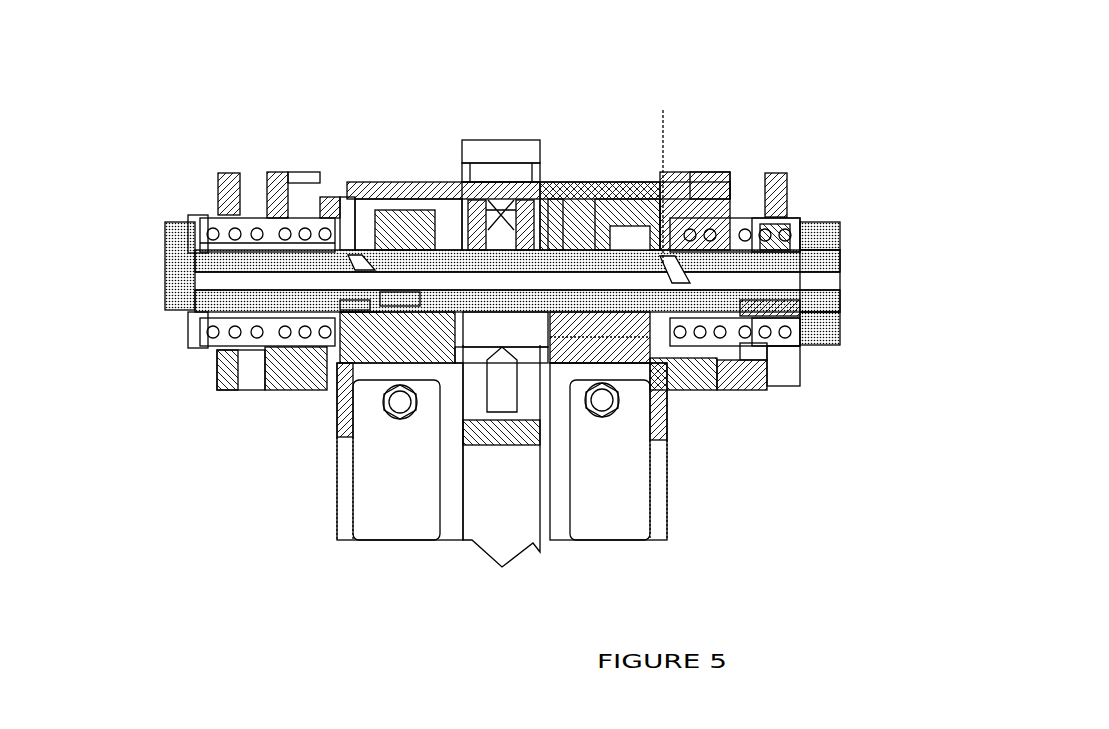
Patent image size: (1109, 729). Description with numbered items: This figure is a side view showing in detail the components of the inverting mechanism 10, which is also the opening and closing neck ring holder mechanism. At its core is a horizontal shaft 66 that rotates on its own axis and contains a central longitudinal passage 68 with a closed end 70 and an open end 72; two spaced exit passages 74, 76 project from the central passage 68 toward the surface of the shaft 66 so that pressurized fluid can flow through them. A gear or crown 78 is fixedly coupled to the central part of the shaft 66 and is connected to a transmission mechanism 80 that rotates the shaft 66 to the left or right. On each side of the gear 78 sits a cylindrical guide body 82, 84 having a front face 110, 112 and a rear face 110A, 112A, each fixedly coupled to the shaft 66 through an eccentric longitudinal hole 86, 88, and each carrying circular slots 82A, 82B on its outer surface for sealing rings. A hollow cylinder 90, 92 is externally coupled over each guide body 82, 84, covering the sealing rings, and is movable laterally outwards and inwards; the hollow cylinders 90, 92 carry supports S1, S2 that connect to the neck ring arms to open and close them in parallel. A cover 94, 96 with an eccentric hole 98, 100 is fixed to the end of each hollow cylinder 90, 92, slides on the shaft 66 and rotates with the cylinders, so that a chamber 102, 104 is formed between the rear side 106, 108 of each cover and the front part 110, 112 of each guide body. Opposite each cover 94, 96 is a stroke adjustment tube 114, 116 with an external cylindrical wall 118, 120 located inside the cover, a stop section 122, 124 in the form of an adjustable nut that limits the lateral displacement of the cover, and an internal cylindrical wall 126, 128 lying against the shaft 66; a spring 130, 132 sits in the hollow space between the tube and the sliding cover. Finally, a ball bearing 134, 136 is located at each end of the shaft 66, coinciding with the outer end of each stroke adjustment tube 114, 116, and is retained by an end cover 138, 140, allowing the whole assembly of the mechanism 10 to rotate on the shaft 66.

The inverting mechanism 10 is at (758, 102).
The shaft 66 is at (812, 385).
The central longitudinal passage 68 is at (354, 350).
The closed end 70 is at (183, 537).
The open end 72 is at (783, 283).
The exit passage 74 is at (350, 255).
The exit passage 76 is at (671, 184).
The gear or crown 78 is at (503, 200).
The transmission mechanism 80 is at (488, 150).
The cylindrical guide body 82 is at (408, 182).
The circular slot 82A is at (423, 198).
The circular slot 82B is at (603, 190).
The cylindrical guide body 84 is at (587, 227).
The longitudinal hole 86 is at (437, 240).
The longitudinal hole 88 is at (578, 240).
The hollow cylinder 90 is at (357, 203).
The hollow cylinder 92 is at (614, 182).
The cover 94 is at (300, 345).
The cover 96 is at (727, 172).
The eccentric hole 98 is at (313, 247).
The eccentric hole 100 is at (690, 247).
The chamber 102 is at (333, 207).
The chamber 104 is at (673, 207).
The rear side 106 is at (365, 325).
The rear side 108 is at (668, 330).
The front face 110 is at (385, 285).
The rear face 110A is at (457, 347).
The front face 112 is at (660, 330).
The rear face 112A is at (548, 347).
The stroke adjustment tube 114 is at (213, 173).
The stroke adjustment tube 116 is at (777, 228).
The external cylindrical wall 118 is at (245, 317).
The external cylindrical wall 120 is at (790, 380).
The stop section 122 is at (258, 335).
The stop section 124 is at (737, 345).
The internal cylindrical wall 126 is at (247, 313).
The internal cylindrical wall 128 is at (783, 315).
The spring 130 is at (243, 332).
The spring 132 is at (778, 240).
The ball bearing 134 is at (195, 230).
The ball bearing 136 is at (810, 235).
The cover 138 is at (190, 271).
The cover 140 is at (833, 327).
The support S1 is at (390, 495).
The support S2 is at (613, 467).